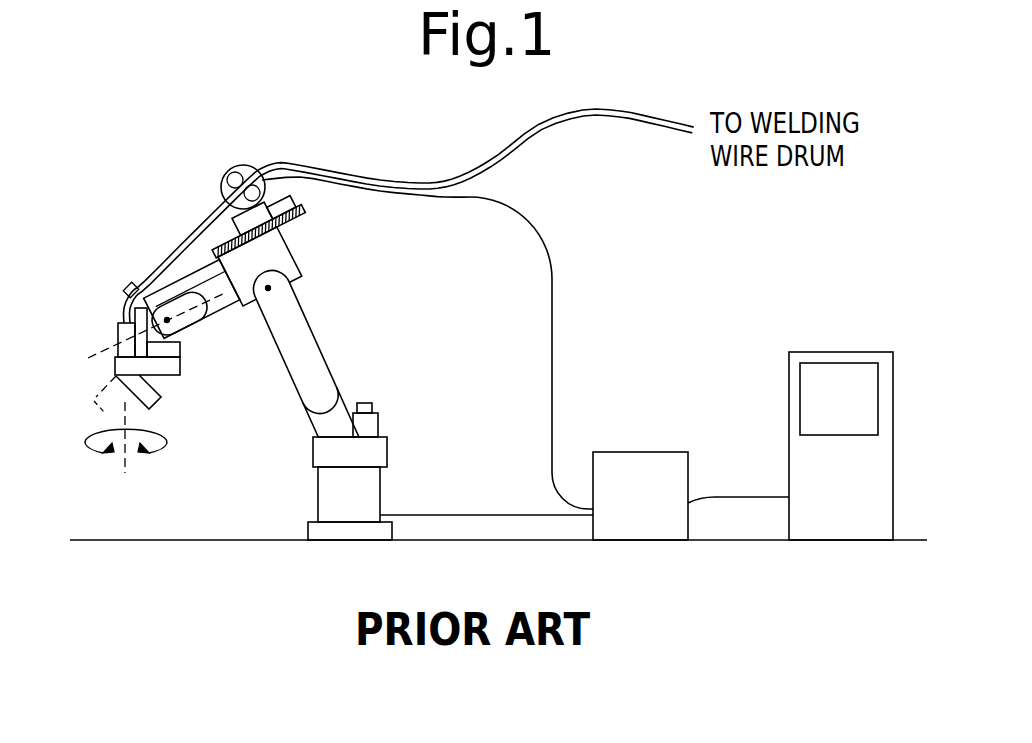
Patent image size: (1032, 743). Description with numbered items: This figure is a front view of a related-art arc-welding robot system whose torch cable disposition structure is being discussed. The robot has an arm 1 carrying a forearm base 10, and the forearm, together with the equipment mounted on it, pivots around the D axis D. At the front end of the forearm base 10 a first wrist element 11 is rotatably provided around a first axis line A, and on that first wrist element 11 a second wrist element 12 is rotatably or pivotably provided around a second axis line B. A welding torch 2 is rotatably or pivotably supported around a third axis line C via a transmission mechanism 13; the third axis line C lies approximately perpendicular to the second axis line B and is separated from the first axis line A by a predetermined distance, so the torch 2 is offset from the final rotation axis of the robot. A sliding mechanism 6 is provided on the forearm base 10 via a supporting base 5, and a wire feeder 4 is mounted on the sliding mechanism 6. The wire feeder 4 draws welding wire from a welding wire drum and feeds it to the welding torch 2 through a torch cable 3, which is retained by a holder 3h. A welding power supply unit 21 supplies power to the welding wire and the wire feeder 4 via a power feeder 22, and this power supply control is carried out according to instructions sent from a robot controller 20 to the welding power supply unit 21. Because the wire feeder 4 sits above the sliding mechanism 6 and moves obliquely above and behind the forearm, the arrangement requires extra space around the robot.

The welding robot arm 1 is at (303, 308).
The welding torch 2 is at (118, 330).
The torch cable 3 is at (160, 283).
The conduit cable holder 3h is at (129, 292).
The wire feeder 4 is at (220, 182).
The supporting base 5 is at (309, 213).
The sliding mechanism 6 is at (279, 197).
The forearm base 10 is at (296, 253).
The first wrist element 11 is at (196, 327).
The second wrist element 12 is at (176, 358).
The transmission mechanism 13 is at (165, 378).
The robot controller 20 is at (843, 375).
The welding power supply unit 21 is at (666, 465).
The power feeder 22 is at (555, 300).
The first axis line A is at (76, 366).
The second axis line B is at (170, 322).
The third axis line C is at (126, 455).
The D axis D is at (276, 286).